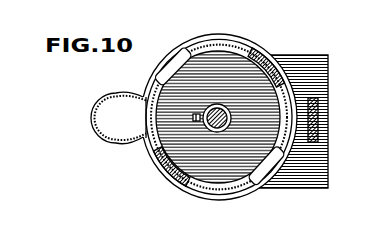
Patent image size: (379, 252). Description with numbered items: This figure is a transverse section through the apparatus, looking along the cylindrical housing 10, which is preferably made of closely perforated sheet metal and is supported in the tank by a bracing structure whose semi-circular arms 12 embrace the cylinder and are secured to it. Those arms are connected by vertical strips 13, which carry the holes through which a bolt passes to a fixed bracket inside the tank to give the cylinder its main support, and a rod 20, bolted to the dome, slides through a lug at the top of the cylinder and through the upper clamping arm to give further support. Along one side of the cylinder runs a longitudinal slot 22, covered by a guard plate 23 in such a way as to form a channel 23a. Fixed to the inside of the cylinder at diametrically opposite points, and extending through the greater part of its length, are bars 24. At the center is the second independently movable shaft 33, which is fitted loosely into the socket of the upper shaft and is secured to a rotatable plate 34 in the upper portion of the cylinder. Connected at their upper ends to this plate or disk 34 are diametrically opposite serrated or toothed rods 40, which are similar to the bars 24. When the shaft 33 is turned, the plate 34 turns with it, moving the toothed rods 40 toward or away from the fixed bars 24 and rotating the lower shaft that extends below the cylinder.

The housing 10 is at (207, 193).
The semi-circular arms 12 is at (255, 186).
The vertical strips 13 is at (329, 62).
The rod 20 is at (318, 130).
The longitudinal slot 22 is at (142, 137).
The guard plate 23 is at (93, 126).
The channel 23a is at (106, 110).
The bars 24 is at (256, 60).
The second independently movable shaft 33 is at (218, 132).
The rotatable plate 34 is at (172, 138).
The serrated or toothed rods 40 is at (156, 69).